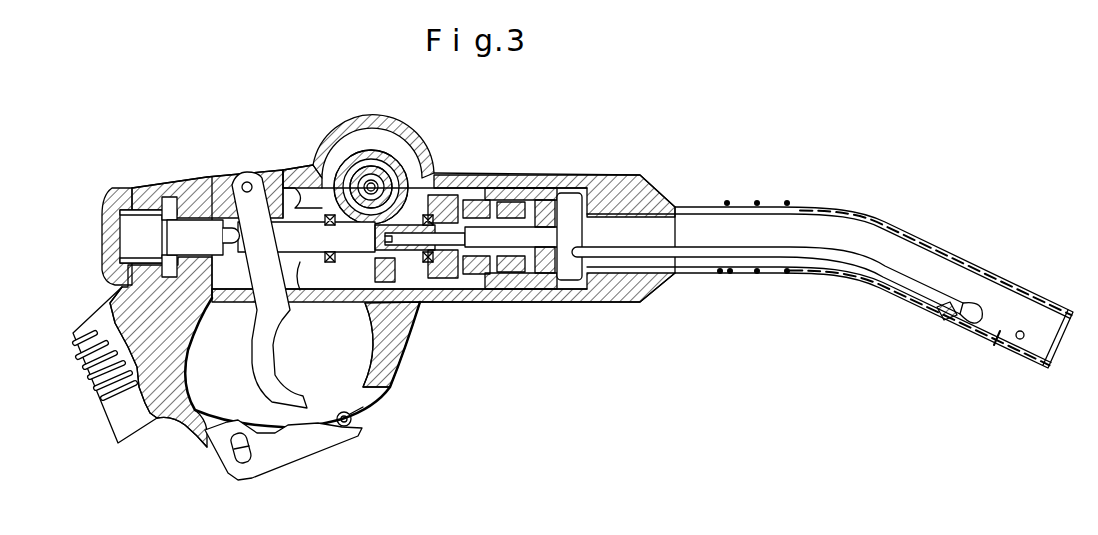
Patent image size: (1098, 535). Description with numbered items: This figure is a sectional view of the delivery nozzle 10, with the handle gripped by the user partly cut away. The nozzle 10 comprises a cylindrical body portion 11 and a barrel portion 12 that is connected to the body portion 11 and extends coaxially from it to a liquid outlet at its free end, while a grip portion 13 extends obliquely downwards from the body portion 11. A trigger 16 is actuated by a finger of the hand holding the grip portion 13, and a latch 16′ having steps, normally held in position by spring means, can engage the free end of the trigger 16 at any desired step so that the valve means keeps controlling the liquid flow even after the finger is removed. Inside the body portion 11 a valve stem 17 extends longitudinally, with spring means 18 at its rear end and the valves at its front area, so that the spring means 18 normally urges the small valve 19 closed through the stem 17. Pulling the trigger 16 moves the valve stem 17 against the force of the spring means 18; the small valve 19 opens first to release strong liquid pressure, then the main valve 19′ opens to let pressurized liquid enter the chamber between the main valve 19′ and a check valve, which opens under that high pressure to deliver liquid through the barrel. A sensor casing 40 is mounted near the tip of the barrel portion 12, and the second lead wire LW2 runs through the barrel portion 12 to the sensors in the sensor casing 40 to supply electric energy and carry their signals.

The delivery nozzle 10 is at (660, 160).
The cylindrical body portion 11 is at (565, 296).
The barrel portion 12 is at (960, 260).
The grip portion 13 is at (140, 412).
The trigger 16 is at (262, 357).
The latch 16′ is at (292, 453).
The valve stem 17 is at (189, 232).
The spring means 18 is at (115, 283).
The small valve 19 is at (433, 175).
The main valve 19′ is at (465, 200).
The second lead wire LW2 is at (872, 268).
The sensor casing 40 is at (1017, 343).